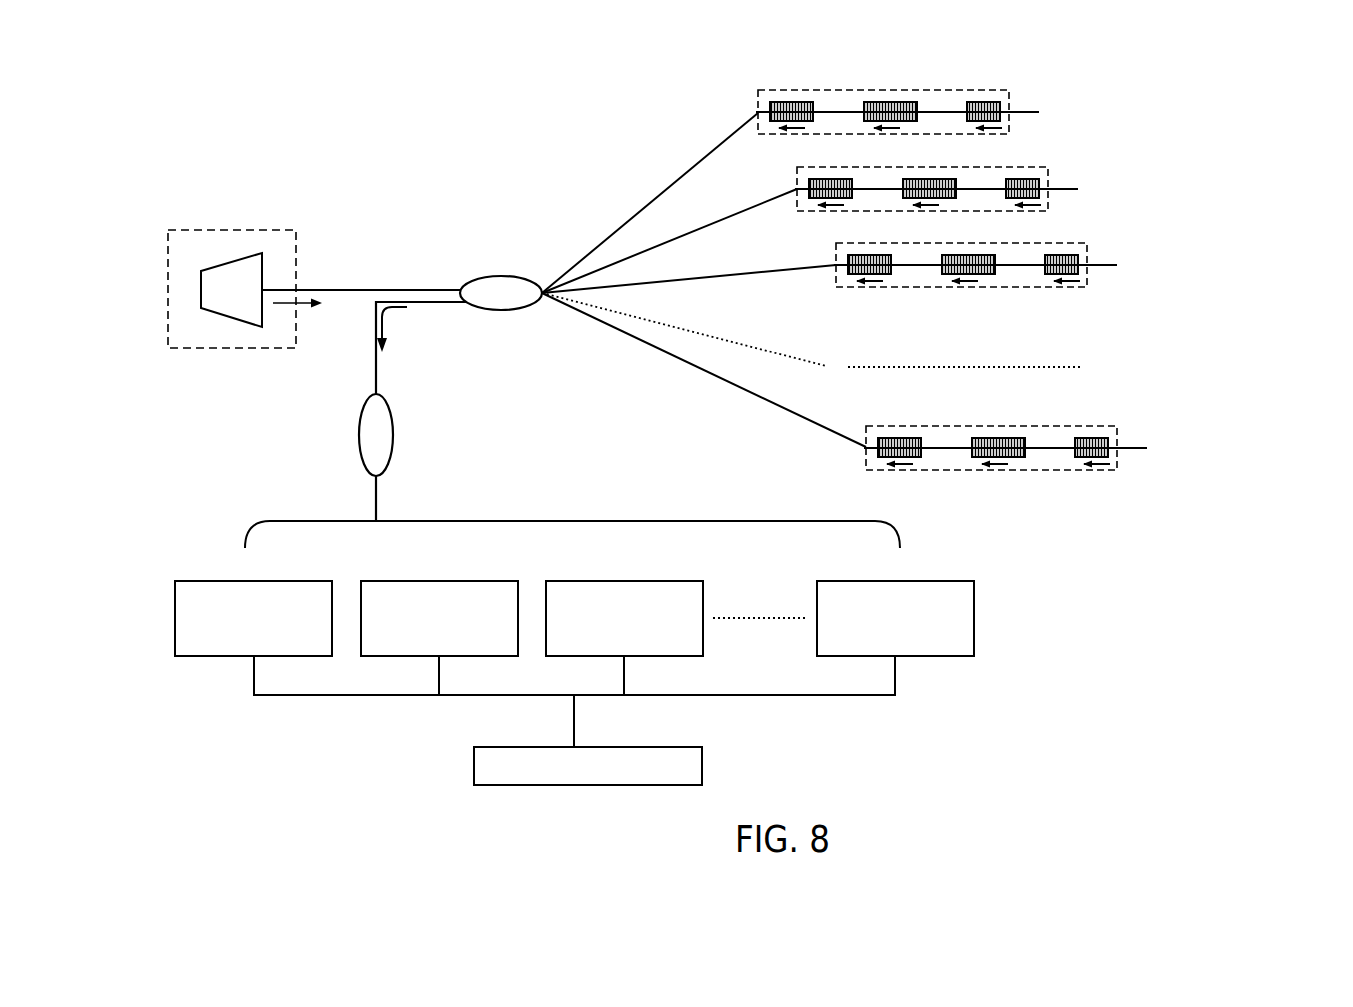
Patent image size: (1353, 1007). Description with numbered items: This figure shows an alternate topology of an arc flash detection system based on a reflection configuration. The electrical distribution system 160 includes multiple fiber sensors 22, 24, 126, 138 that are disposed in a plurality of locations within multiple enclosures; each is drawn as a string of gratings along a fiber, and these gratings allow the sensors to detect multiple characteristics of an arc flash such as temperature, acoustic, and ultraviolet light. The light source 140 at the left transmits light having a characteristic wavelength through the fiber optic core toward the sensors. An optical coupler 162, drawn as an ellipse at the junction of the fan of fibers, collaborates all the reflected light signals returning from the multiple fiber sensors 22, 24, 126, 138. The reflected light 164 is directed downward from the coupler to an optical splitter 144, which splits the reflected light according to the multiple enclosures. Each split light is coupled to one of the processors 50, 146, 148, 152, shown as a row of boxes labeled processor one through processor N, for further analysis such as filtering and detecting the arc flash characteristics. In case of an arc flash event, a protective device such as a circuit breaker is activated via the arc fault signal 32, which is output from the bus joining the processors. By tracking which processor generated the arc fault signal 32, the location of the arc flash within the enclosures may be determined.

The electrical distribution system 160 is at (1233, 126).
The light source 140 is at (228, 230).
The optical coupler 162 is at (490, 276).
The reflected light 164 is at (388, 330).
The optical splitter 144 is at (394, 425).
The fiber sensor 22 is at (1013, 88).
The fiber sensor 24 is at (1052, 165).
The fiber sensor 126 is at (1092, 241).
The fiber sensor 138 is at (1122, 424).
The processor 50 is at (293, 581).
The processor 146 is at (437, 581).
The processor 148 is at (624, 581).
The processor 152 is at (930, 581).
The arc fault signal 32 is at (703, 763).